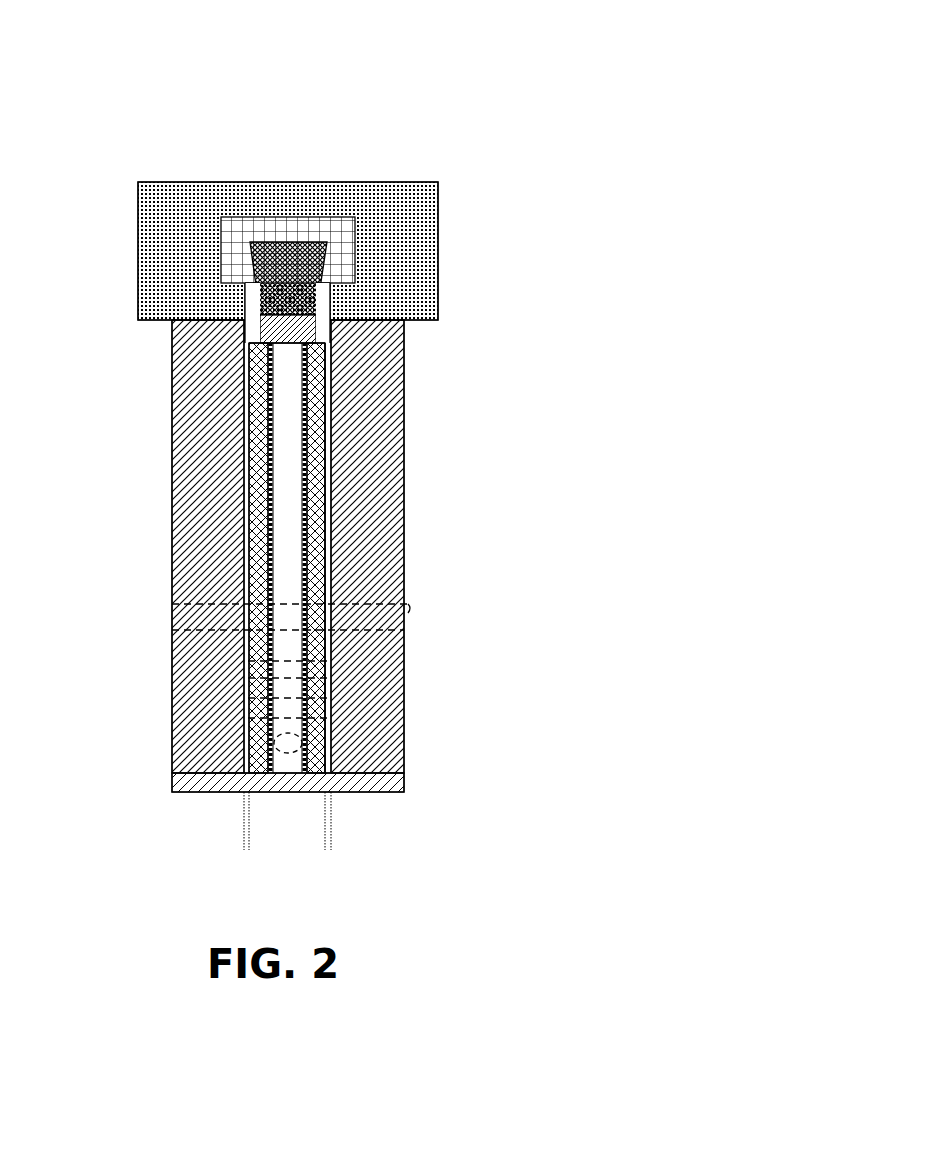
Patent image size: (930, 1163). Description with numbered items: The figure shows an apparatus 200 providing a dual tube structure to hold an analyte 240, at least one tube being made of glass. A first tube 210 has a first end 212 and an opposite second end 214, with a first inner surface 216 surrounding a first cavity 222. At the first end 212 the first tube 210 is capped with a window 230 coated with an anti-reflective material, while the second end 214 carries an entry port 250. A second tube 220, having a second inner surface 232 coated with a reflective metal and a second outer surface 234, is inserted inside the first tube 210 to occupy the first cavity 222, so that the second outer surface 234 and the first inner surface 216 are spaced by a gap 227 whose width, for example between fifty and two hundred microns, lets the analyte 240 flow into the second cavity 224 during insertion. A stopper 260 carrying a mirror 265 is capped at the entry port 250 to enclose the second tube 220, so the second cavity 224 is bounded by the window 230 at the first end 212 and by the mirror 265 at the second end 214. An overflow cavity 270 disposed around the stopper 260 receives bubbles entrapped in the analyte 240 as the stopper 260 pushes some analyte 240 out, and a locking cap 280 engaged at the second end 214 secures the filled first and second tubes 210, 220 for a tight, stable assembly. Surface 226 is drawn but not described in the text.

The apparatus 200 is at (533, 80).
The locking cap 280 is at (288, 251).
The overflow cavity 270 is at (295, 232).
The stopper 260 is at (296, 282).
The mirror 265 is at (297, 330).
The second end 214 is at (443, 322).
The first end 212 is at (443, 766).
The entry port 250 is at (230, 345).
The analyte 240 is at (283, 477).
The second inner surface 232 is at (273, 372).
The second outer surface 234 is at (253, 428).
The first inner surface 216 is at (242, 502).
The second tube inner wall surface 226 is at (277, 557).
The first cavity 222 is at (323, 660).
The second cavity 224 is at (292, 743).
The first tube 210 is at (190, 602).
The second tube 220 is at (258, 693).
The window 230 is at (183, 785).
The gap 227 is at (280, 844).